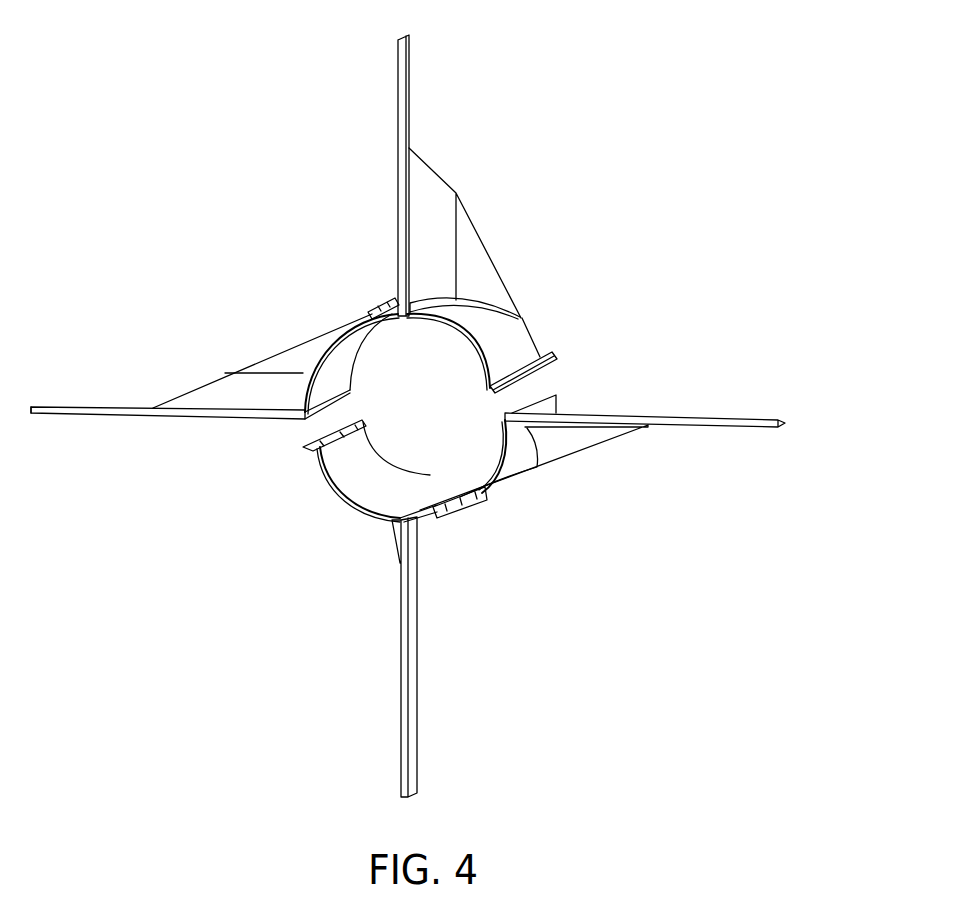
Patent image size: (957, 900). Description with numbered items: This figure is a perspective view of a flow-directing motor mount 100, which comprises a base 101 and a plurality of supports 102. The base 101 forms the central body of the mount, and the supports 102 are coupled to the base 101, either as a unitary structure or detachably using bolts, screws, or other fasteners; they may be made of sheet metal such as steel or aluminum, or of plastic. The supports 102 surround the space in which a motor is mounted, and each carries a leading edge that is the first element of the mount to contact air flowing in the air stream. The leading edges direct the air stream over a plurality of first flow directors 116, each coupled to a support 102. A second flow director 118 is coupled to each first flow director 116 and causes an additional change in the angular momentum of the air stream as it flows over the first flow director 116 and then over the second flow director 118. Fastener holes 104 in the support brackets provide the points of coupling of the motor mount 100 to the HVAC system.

The flow-directing motor mount 100 is at (244, 74).
The base 101 is at (353, 348).
The support 102 is at (403, 144).
The fastener hole 104 is at (543, 357).
The first flow director 116 is at (448, 237).
The second flow director 118 is at (488, 277).